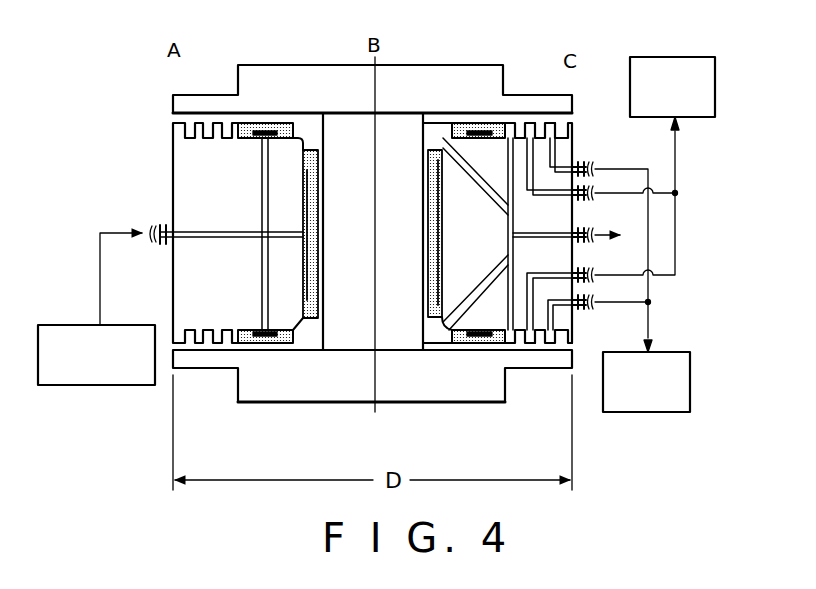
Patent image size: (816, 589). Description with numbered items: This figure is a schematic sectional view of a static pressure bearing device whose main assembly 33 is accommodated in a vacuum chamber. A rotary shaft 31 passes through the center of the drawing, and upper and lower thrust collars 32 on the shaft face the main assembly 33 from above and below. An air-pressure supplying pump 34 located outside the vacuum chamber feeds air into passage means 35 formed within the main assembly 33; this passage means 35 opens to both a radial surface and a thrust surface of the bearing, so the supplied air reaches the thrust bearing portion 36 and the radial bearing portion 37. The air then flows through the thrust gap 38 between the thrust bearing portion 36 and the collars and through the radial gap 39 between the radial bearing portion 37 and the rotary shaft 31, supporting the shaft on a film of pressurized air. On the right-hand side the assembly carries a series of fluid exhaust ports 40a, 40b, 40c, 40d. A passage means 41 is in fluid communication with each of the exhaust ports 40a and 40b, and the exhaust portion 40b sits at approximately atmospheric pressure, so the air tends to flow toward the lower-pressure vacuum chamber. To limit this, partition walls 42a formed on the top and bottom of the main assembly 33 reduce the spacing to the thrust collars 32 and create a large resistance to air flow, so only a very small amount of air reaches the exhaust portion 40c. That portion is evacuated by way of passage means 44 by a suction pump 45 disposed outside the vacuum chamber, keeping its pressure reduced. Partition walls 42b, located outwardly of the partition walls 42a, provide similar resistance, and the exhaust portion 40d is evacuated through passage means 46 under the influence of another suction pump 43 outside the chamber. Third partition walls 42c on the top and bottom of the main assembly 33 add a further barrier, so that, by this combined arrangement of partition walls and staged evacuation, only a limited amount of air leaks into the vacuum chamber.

The rotary shaft 31 is at (355, 335).
The thrust collars 32 is at (305, 383).
The main assembly of the bearing device 33 is at (183, 168).
The air-pressure supplying pump 34 is at (73, 325).
The passage means 35 is at (190, 225).
The thrust bearing portion 36 is at (267, 128).
The radial bearing portion 37 is at (314, 150).
The thrust gap 38 is at (260, 347).
The radial gap 39 is at (321, 291).
The fluid exhaust port 40a is at (442, 337).
The fluid exhaust port 40b is at (508, 343).
The fluid exhaust port 40c is at (532, 343).
The fluid exhaust port 40d is at (552, 343).
The passage means 41 is at (547, 238).
The partition walls 42a is at (517, 127).
The partition walls 42b is at (538, 127).
The third partition walls 42c is at (568, 123).
The suction pump 43 is at (676, 352).
The passage means 44 is at (543, 197).
The suction pump 45 is at (695, 57).
The passage means 46 is at (560, 163).